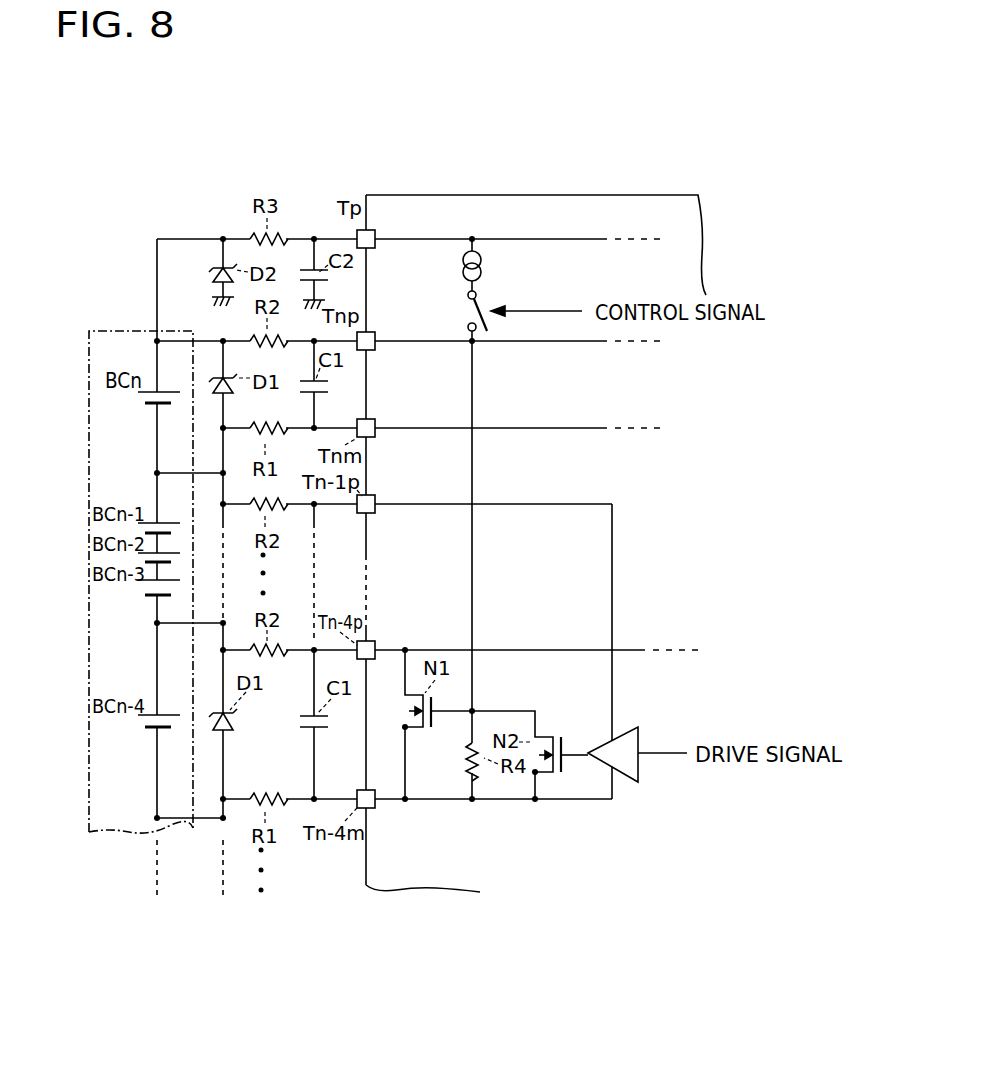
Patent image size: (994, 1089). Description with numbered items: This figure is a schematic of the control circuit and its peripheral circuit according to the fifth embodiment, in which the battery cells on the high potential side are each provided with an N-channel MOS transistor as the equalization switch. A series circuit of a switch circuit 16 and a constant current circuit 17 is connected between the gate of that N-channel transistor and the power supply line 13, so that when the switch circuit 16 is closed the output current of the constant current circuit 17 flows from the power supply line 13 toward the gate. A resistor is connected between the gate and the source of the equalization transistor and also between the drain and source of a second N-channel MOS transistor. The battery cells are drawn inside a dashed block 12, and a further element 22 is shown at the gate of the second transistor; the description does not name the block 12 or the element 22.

The battery block 12 is at (106, 330).
The power supply line 13 is at (532, 236).
The switch circuit 16 is at (460, 315).
The constant current circuit 17 is at (460, 269).
The driver 22 is at (625, 733).